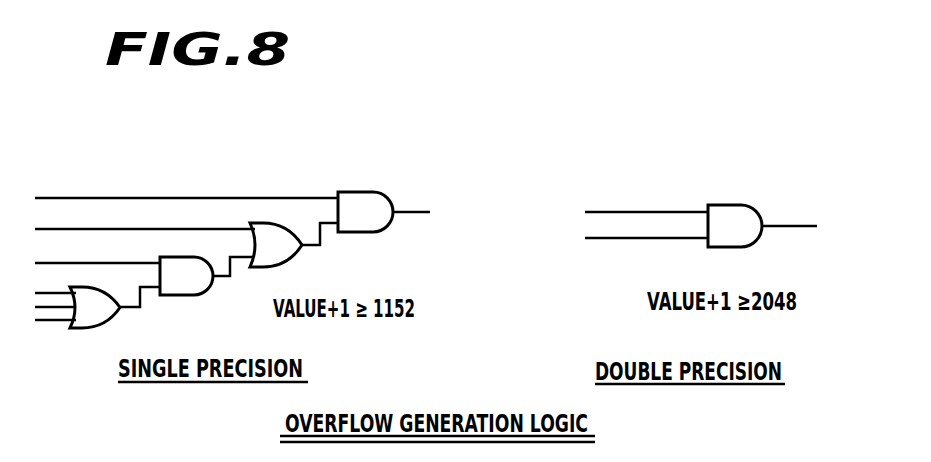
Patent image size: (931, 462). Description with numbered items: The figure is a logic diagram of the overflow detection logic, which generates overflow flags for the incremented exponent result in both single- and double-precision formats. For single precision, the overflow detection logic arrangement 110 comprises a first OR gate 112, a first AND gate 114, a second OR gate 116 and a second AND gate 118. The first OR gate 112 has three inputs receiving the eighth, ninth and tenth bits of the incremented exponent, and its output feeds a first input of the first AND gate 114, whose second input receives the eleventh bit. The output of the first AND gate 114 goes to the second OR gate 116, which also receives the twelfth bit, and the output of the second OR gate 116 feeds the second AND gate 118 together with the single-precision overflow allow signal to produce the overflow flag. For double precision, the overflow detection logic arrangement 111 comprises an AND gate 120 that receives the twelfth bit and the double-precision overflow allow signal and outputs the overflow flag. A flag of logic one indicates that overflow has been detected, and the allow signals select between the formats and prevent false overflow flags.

The overflow detection logic arrangement 110 is at (293, 158).
The overflow detection logic arrangement 111 is at (720, 160).
The first OR gate 112 is at (100, 329).
The first AND gate 114 is at (195, 297).
The second OR gate 116 is at (292, 258).
The second AND gate 118 is at (375, 233).
The AND gate 120 is at (752, 243).